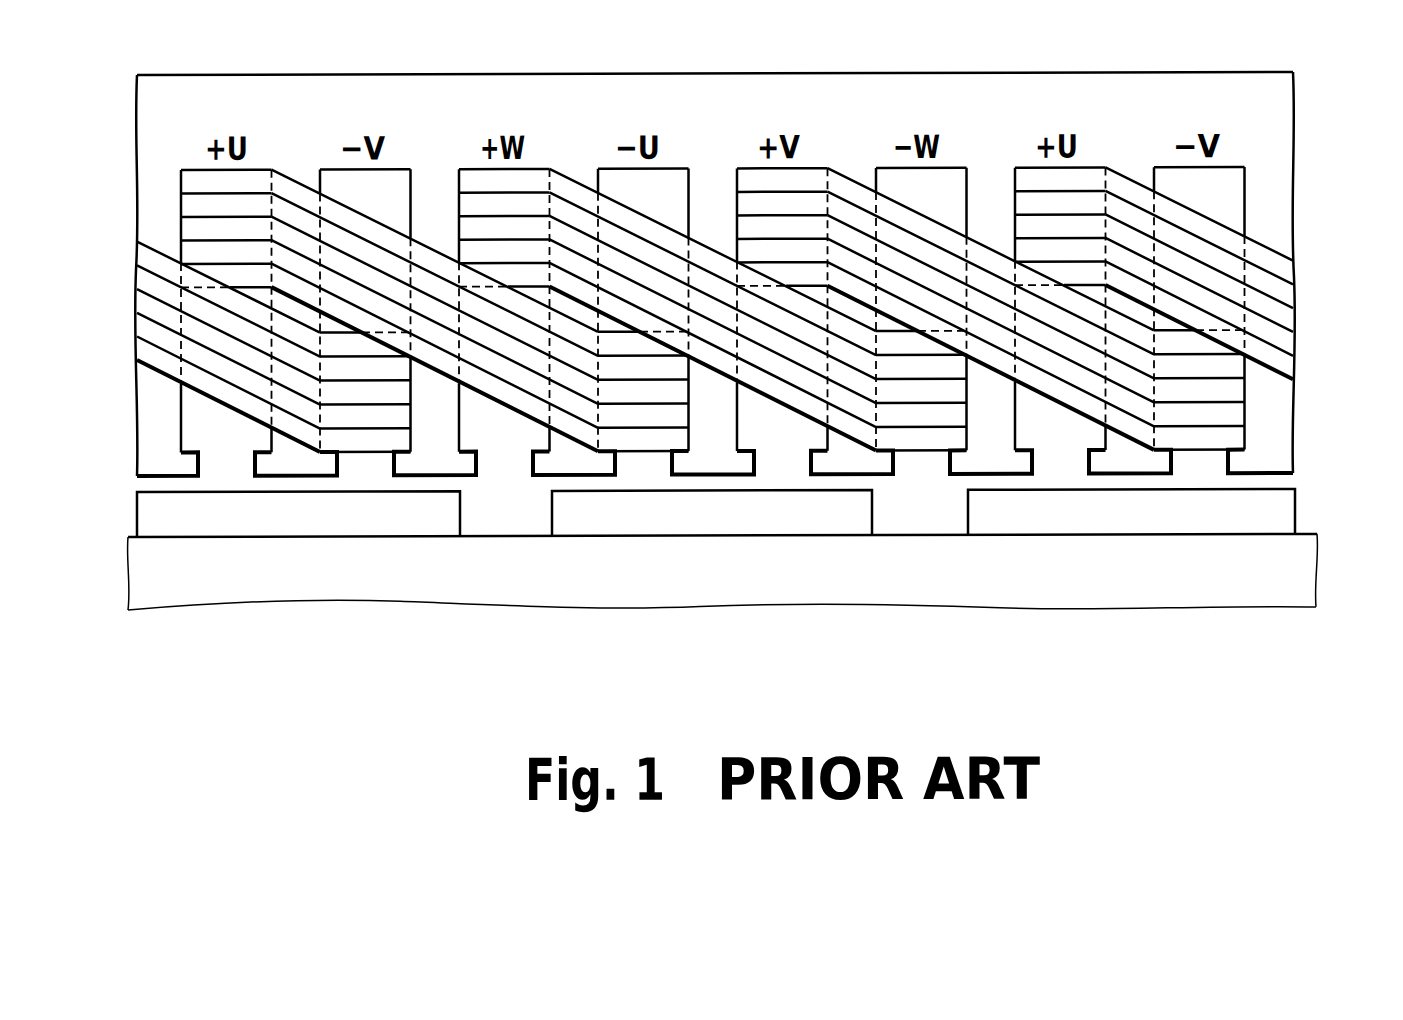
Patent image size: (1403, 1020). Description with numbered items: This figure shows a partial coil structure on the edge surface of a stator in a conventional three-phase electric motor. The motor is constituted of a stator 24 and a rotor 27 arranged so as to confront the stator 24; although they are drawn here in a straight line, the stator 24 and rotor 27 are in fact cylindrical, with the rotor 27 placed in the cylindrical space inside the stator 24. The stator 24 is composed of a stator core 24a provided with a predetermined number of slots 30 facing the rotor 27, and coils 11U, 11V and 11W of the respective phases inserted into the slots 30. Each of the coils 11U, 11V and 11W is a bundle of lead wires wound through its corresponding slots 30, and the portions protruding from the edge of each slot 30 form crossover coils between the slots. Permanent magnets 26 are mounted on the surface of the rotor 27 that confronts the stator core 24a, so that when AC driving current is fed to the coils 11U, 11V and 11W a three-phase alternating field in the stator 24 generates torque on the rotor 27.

The stator 24 is at (727, 275).
The stator core 24a is at (1291, 206).
The coil 11U is at (737, 264).
The coil 11V is at (818, 177).
The coil 11W is at (540, 177).
The slot 30 is at (390, 193).
The permanent magnet 26 is at (1298, 517).
The rotor 27 is at (1312, 594).